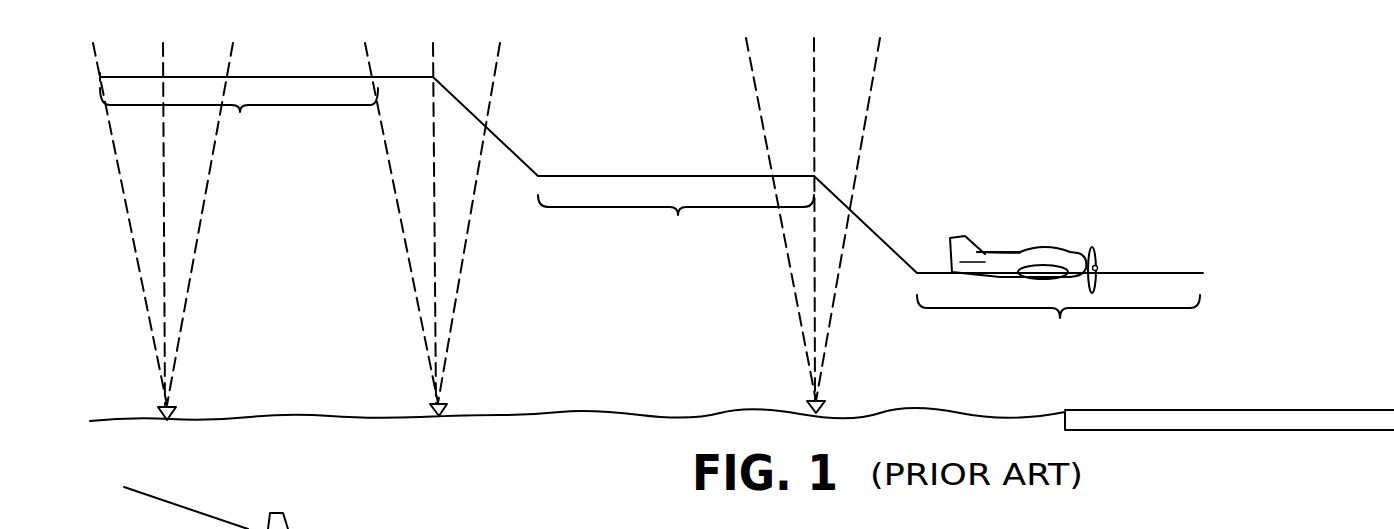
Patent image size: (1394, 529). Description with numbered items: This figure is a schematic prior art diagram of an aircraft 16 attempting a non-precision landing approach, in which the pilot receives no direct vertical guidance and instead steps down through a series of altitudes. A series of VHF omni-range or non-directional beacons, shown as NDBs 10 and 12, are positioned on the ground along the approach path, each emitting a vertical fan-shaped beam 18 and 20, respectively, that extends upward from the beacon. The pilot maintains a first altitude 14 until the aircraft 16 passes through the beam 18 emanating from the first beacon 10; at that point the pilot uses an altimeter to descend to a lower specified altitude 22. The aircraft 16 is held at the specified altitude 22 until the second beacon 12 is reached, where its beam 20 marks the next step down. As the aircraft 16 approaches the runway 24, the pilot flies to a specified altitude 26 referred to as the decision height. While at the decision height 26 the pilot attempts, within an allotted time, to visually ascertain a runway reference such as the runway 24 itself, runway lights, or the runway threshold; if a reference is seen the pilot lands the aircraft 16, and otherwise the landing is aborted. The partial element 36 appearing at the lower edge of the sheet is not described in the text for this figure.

In FIG. 1, the non-directional beacon 10 is at (447, 405).
In FIG. 1, the non-directional beacon 12 is at (826, 403).
In FIG. 1, the first altitude 14 is at (239, 120).
In FIG. 1, the aircraft 16 is at (1052, 230).
In FIG. 1, the vertical fan-shaped beam 18 is at (480, 293).
In FIG. 1, the vertical fan-shaped beam 20 is at (858, 329).
In FIG. 1, the lower specified altitude 22 is at (676, 225).
In FIG. 1, the runway 24 is at (1231, 410).
In FIG. 1, the specified altitude (decision height) 26 is at (1058, 329).
In FIG. 2, the component of FIG. 2 36 is at (380, 527).